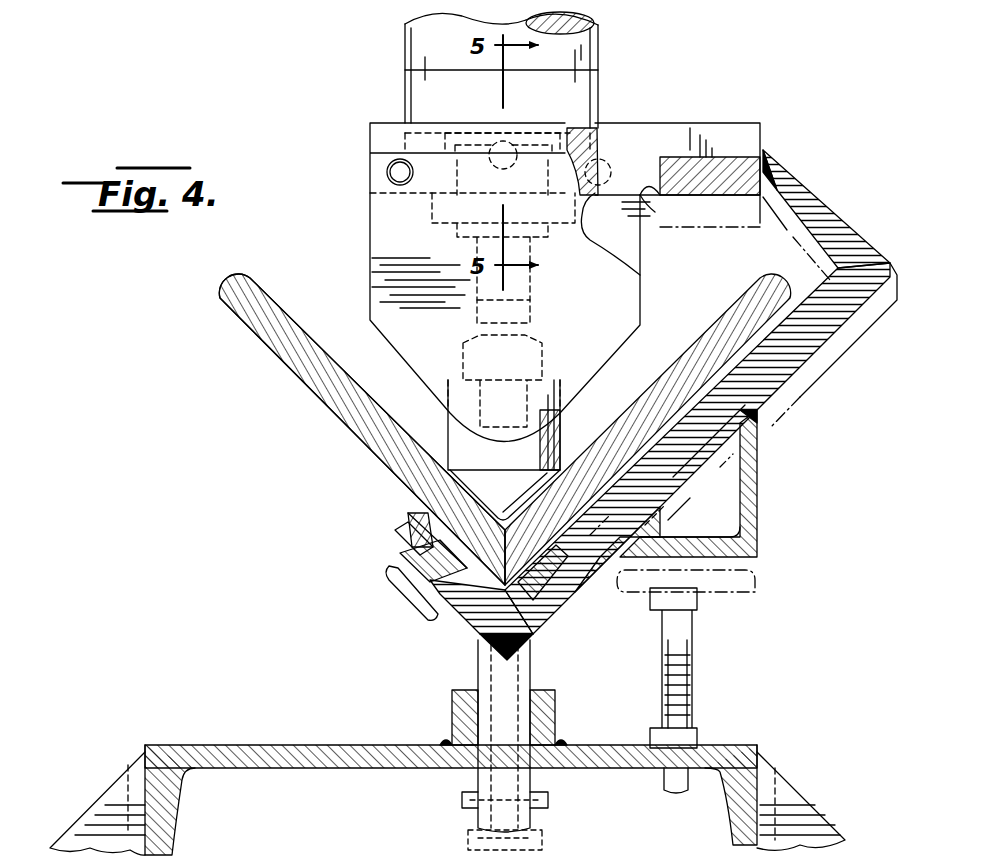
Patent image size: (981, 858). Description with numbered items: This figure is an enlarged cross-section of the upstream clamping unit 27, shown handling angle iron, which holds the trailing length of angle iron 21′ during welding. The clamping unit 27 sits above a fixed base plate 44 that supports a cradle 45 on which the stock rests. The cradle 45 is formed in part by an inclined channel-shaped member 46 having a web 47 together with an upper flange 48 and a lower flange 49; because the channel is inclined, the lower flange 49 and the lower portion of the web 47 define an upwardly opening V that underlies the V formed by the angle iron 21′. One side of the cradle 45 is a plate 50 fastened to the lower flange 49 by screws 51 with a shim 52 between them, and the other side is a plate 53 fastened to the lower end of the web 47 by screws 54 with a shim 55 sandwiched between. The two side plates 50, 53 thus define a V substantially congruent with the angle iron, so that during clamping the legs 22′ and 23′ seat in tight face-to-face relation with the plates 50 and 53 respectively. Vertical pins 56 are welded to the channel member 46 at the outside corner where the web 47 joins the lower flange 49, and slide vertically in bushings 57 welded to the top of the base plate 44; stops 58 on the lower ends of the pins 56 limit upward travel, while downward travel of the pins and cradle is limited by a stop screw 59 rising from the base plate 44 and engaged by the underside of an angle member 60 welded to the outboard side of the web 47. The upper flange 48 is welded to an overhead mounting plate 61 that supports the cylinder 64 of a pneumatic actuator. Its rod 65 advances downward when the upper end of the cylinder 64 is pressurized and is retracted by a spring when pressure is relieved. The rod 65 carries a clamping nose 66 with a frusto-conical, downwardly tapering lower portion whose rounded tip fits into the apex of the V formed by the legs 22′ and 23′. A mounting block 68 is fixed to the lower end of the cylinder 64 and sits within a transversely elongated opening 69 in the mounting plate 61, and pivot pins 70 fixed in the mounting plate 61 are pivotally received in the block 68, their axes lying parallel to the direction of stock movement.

The upstream clamping unit 27 is at (378, 70).
The cylinder 64 is at (590, 57).
The mounting block 68 is at (598, 128).
The overhead mounting plate 61 is at (730, 150).
The pivot pins 70 is at (498, 143).
The transversely elongated opening 69 is at (648, 205).
The upper flange 48 is at (832, 210).
The rod 65 is at (530, 300).
The clamping nose 66 is at (560, 442).
The leg of angle iron 23′ is at (722, 325).
The leg of angle iron 22′ is at (290, 350).
The trailing length of angle iron stock 21′ is at (305, 403).
The cradle 45 is at (392, 502).
The shim 52 is at (405, 521).
The screws 51 is at (400, 556).
The plate 50 is at (432, 588).
The plate 53 is at (545, 550).
The lower flange 49 is at (452, 622).
The screws 54 is at (605, 560).
The shim 55 is at (668, 520).
The channel-shaped member 46 is at (725, 455).
The web 47 is at (675, 476).
The angle member 60 is at (757, 535).
The vertical pins 56 is at (522, 700).
The bushings 57 is at (452, 705).
The stops 58 is at (548, 800).
The fixed base plate 44 is at (312, 742).
The stop screw 59 is at (690, 660).